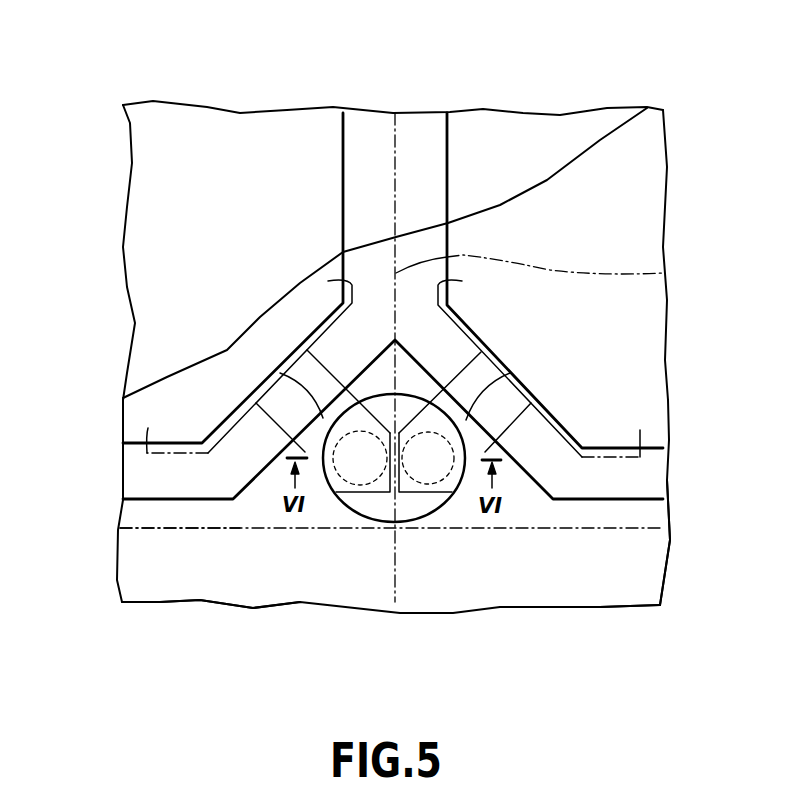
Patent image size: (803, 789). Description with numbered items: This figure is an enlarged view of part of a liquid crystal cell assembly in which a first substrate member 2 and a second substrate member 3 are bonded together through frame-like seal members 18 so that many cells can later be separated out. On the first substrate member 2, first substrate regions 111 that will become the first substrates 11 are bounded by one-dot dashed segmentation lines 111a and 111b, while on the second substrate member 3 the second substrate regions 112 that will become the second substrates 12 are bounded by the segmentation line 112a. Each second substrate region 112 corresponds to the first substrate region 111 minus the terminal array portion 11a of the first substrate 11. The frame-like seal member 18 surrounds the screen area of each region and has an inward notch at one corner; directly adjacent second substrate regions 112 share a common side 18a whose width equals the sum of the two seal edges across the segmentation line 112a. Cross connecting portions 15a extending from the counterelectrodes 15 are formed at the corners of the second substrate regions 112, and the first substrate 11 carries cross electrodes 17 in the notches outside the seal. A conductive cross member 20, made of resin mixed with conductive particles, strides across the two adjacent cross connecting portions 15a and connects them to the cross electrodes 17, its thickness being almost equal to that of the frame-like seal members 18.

The first substrate member 2 is at (684, 557).
The second substrate member 3 is at (170, 92).
The first substrate 11 is at (396, 502).
The terminal array portion 11a is at (173, 572).
The first substrate region 111 is at (135, 413).
The segmentation line 111a is at (663, 271).
The segmentation line 111b is at (153, 528).
The second substrate 12 is at (353, 216).
The second substrate region 112 is at (145, 209).
The segmentation line 112a is at (395, 180).
The counterelectrode 15 is at (158, 455).
The cross connecting portion 15a is at (280, 373).
The cross electrode 17 is at (358, 472).
The frame-like seal member 18 is at (217, 487).
The common side 18a is at (437, 172).
The conductive cross member 20 is at (379, 512).